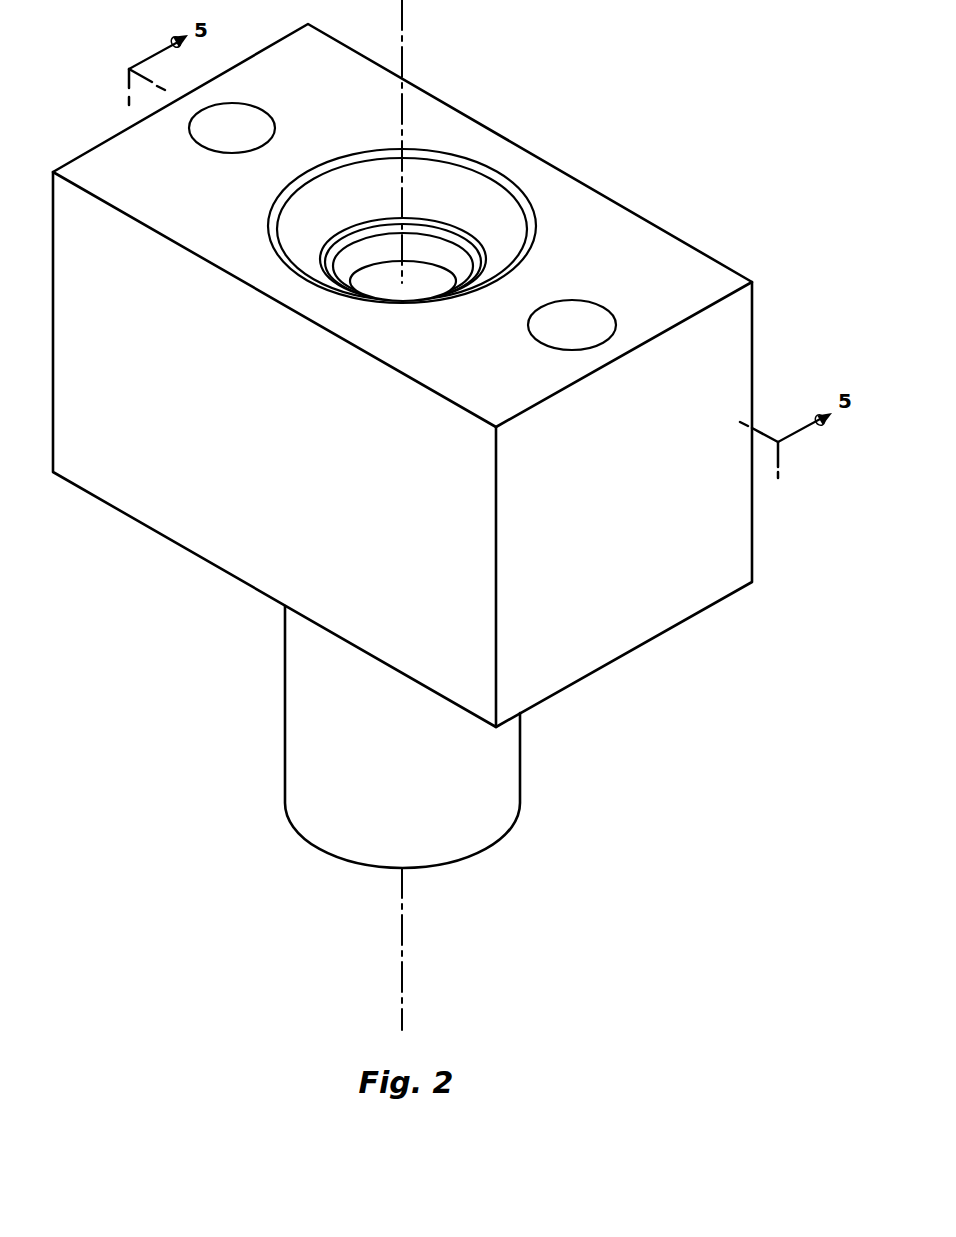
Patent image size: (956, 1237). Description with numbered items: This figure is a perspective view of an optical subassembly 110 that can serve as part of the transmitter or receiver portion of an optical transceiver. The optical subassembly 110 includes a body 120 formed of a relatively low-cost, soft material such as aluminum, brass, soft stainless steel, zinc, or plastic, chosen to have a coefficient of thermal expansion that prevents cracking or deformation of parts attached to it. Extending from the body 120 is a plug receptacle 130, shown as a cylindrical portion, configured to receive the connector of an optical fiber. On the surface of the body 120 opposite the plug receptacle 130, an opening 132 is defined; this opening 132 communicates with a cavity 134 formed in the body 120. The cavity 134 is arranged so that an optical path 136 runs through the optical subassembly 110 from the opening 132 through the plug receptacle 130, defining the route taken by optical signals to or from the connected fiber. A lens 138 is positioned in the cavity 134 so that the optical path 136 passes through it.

The optical subassembly 110 is at (702, 190).
The body 120 is at (767, 377).
The plug receptacle 130 is at (536, 795).
The opening 132 is at (354, 150).
The cavity 134 is at (465, 205).
The optical path 136 is at (402, 97).
The lens 138 is at (383, 283).